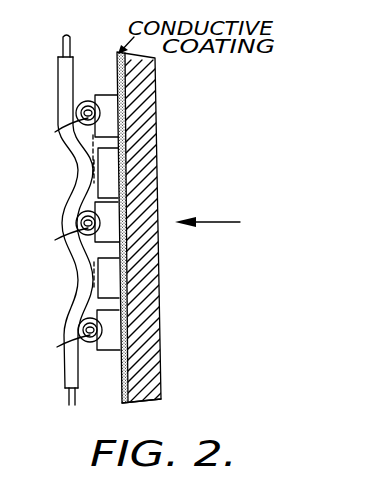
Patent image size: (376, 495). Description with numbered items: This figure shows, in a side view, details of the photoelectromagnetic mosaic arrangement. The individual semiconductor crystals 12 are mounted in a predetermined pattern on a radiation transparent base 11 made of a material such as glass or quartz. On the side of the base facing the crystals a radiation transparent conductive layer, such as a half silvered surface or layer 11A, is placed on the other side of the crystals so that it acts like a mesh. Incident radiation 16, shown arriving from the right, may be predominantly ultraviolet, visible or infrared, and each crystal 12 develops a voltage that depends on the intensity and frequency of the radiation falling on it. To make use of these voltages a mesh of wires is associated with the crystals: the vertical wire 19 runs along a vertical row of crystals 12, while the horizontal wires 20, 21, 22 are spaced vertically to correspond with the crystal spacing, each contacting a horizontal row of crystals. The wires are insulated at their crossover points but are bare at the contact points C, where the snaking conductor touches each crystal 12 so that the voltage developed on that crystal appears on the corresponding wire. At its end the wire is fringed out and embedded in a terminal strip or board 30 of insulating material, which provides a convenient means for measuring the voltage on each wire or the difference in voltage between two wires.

The radiation transparent base 11 is at (143, 157).
The half silvered surface or layer 11A is at (118, 400).
The semiconductor crystals 12 is at (112, 107).
The incident radiation 16 is at (215, 232).
The vertical wire 19 is at (65, 46).
The horizontal wire 20 is at (88, 118).
The horizontal wire 21 is at (88, 226).
The horizontal wire 22 is at (90, 328).
The terminal strip or board 30 is at (11, 40).
The contact point C is at (63, 139).